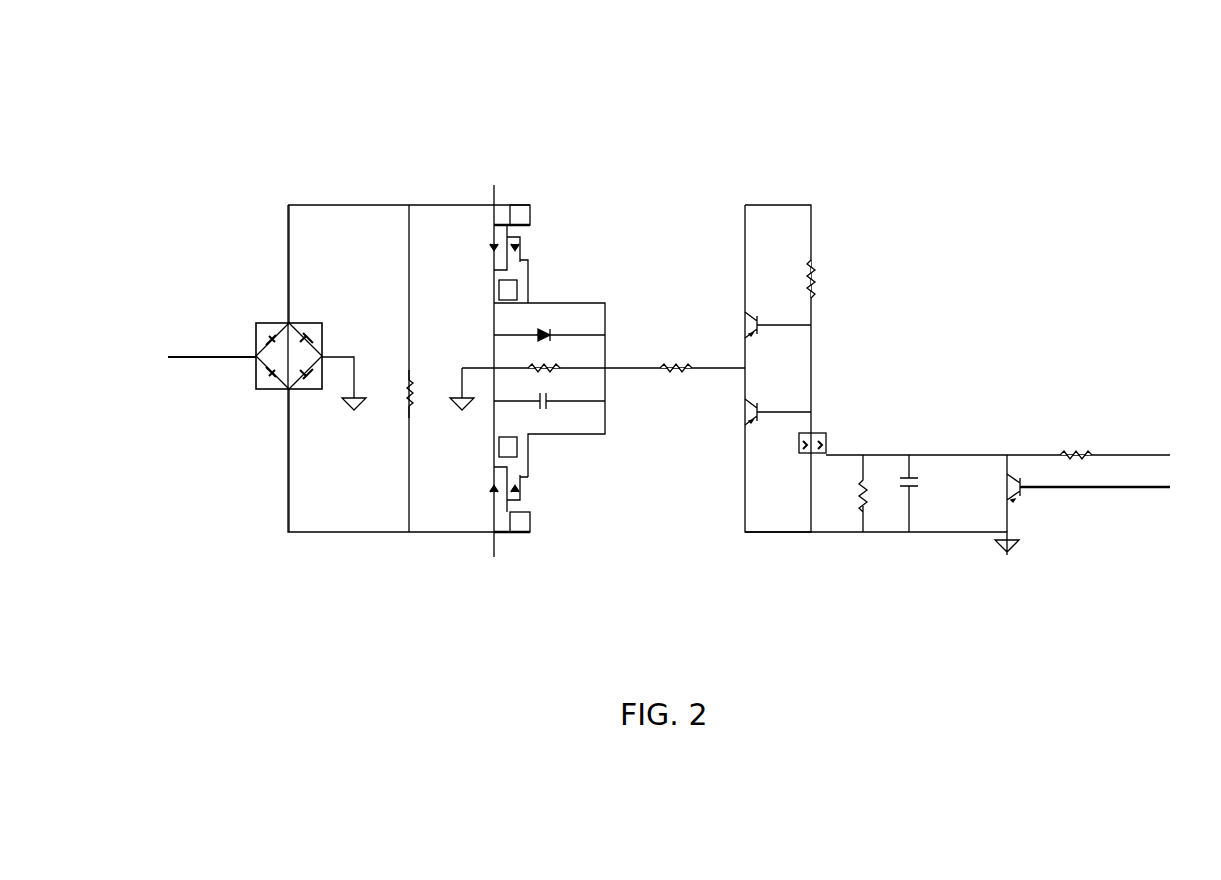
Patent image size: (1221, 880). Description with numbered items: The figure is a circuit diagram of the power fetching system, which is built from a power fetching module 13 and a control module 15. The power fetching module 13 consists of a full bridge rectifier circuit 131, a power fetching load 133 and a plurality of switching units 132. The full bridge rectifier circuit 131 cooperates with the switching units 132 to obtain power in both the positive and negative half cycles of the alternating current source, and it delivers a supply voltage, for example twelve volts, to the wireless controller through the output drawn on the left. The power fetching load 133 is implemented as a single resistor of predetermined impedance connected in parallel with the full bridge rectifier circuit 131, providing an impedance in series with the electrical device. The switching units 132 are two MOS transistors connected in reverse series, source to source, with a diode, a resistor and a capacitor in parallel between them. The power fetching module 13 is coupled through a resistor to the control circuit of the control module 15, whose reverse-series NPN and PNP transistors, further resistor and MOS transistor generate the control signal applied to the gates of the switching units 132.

The power fetching module 13 is at (330, 174).
The full bridge rectifier circuit 131 is at (220, 378).
The switching units 132 is at (455, 508).
The power fetching load 133 is at (386, 404).
The control module 15 is at (858, 243).